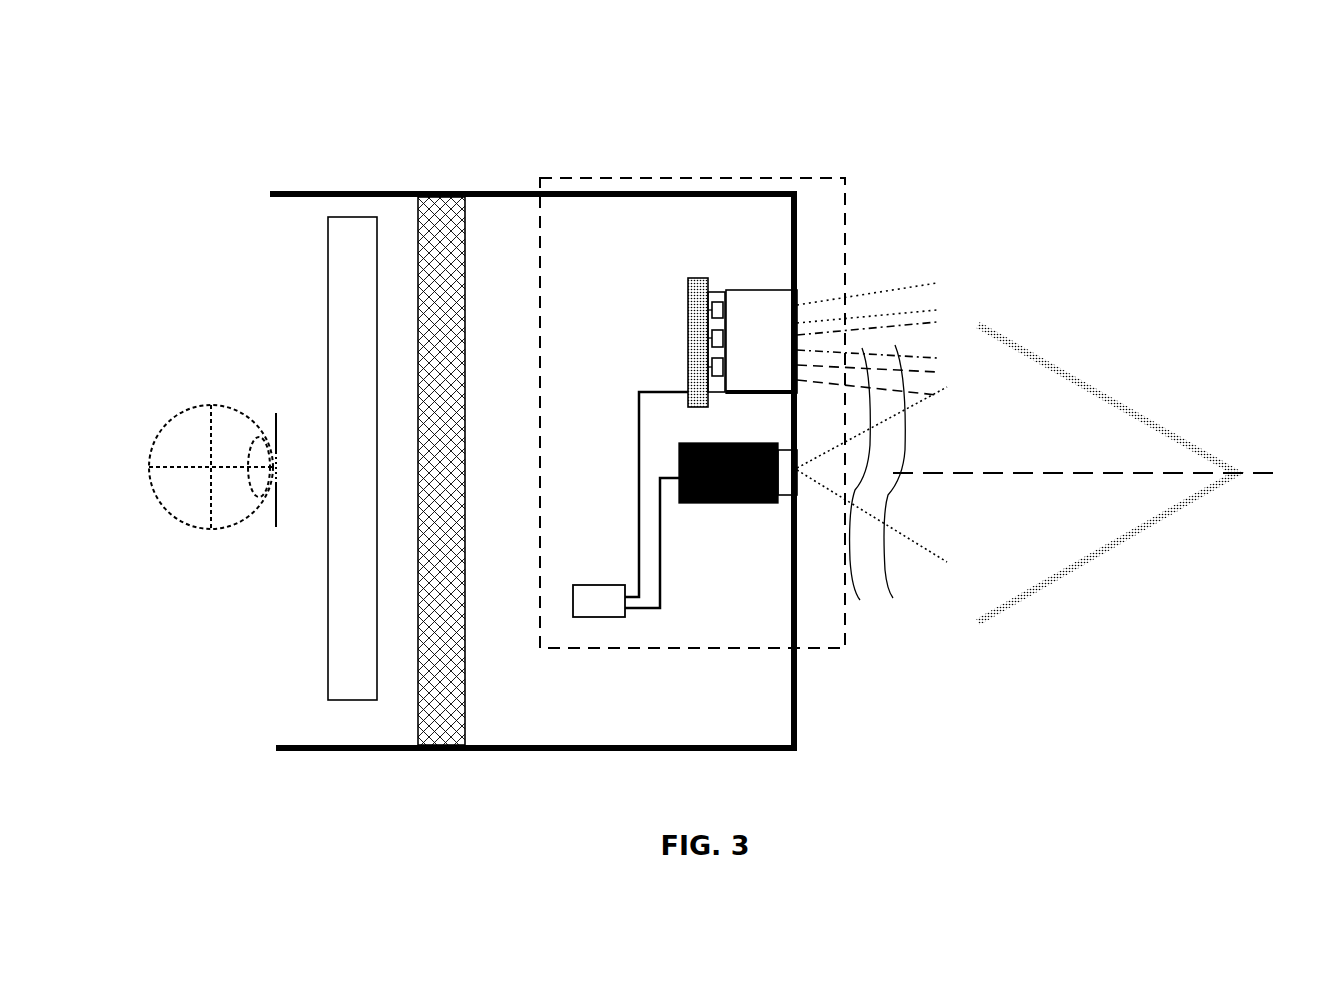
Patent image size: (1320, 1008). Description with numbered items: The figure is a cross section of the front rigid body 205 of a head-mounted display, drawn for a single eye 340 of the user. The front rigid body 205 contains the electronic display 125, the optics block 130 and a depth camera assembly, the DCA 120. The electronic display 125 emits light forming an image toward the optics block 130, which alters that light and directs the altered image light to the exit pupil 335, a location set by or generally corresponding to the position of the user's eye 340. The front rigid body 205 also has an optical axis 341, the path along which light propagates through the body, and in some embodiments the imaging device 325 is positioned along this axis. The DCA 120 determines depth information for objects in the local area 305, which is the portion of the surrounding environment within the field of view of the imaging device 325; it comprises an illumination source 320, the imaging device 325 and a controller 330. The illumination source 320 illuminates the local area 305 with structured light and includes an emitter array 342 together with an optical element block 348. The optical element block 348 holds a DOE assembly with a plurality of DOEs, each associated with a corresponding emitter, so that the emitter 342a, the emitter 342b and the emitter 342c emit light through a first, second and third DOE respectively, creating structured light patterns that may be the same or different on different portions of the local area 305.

The electronic display 125 is at (417, 240).
The optics block 130 is at (367, 700).
The exit pupil 335 is at (276, 415).
The eye 340 is at (178, 522).
The emitter 342a is at (688, 357).
The emitter 342b is at (688, 322).
The emitter 342c is at (717, 292).
The emitter array 342 is at (641, 225).
The illumination source 320 is at (802, 322).
The optical element block 348 is at (768, 278).
The optical axis 341 is at (1237, 473).
The local area 305 is at (1090, 560).
The DCA 120 is at (847, 628).
The front rigid body 205 is at (797, 610).
The imaging device 325 is at (713, 503).
The controller 330 is at (593, 617).